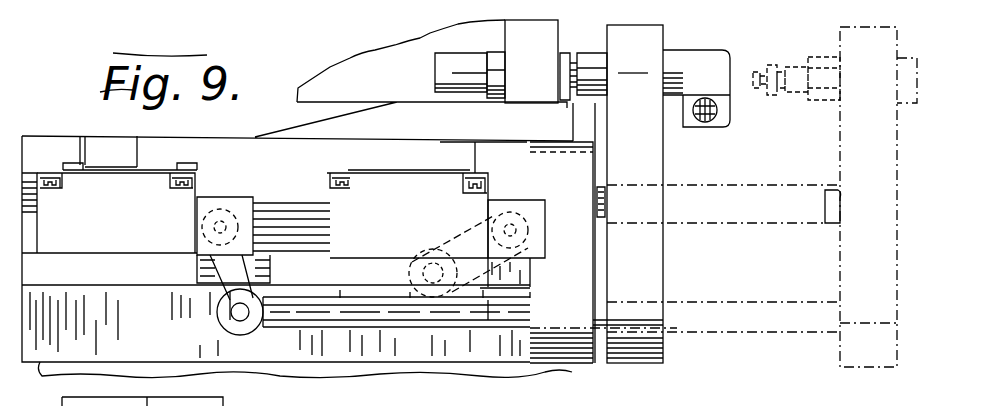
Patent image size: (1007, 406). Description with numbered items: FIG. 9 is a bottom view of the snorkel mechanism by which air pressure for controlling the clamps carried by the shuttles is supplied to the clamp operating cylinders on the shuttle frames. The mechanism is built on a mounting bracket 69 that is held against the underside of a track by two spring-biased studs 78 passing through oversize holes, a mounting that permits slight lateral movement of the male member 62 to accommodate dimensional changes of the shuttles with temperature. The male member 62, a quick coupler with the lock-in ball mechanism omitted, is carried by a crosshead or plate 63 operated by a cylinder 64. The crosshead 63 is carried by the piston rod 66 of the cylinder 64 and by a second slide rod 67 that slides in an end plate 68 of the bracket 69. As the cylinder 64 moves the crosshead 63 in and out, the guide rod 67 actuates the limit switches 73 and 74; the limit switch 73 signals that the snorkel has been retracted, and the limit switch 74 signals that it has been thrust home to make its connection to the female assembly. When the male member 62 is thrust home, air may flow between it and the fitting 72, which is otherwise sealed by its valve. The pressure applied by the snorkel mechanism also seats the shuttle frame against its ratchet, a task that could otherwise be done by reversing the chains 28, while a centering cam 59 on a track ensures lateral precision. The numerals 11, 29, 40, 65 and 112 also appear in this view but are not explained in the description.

The section line 11 is at (468, 73).
The chains 28 is at (537, 37).
The base 29 is at (189, 398).
The support 40 is at (377, 400).
The centering cam 59 is at (350, 128).
The male member 62 is at (593, 55).
The crosshead 63 is at (840, 162).
The cylinder 64 is at (300, 182).
The cover 65 is at (232, 4).
The piston rod 66 is at (748, 218).
The slide rod 67 is at (597, 300).
The end plate 68 is at (577, 353).
The mounting bracket 69 is at (80, 268).
The fitting 72 is at (498, 70).
The limit switch 73 is at (412, 225).
The limit switch 74 is at (130, 220).
The studs 78 is at (449, 398).
The slide bar 112 is at (548, 368).